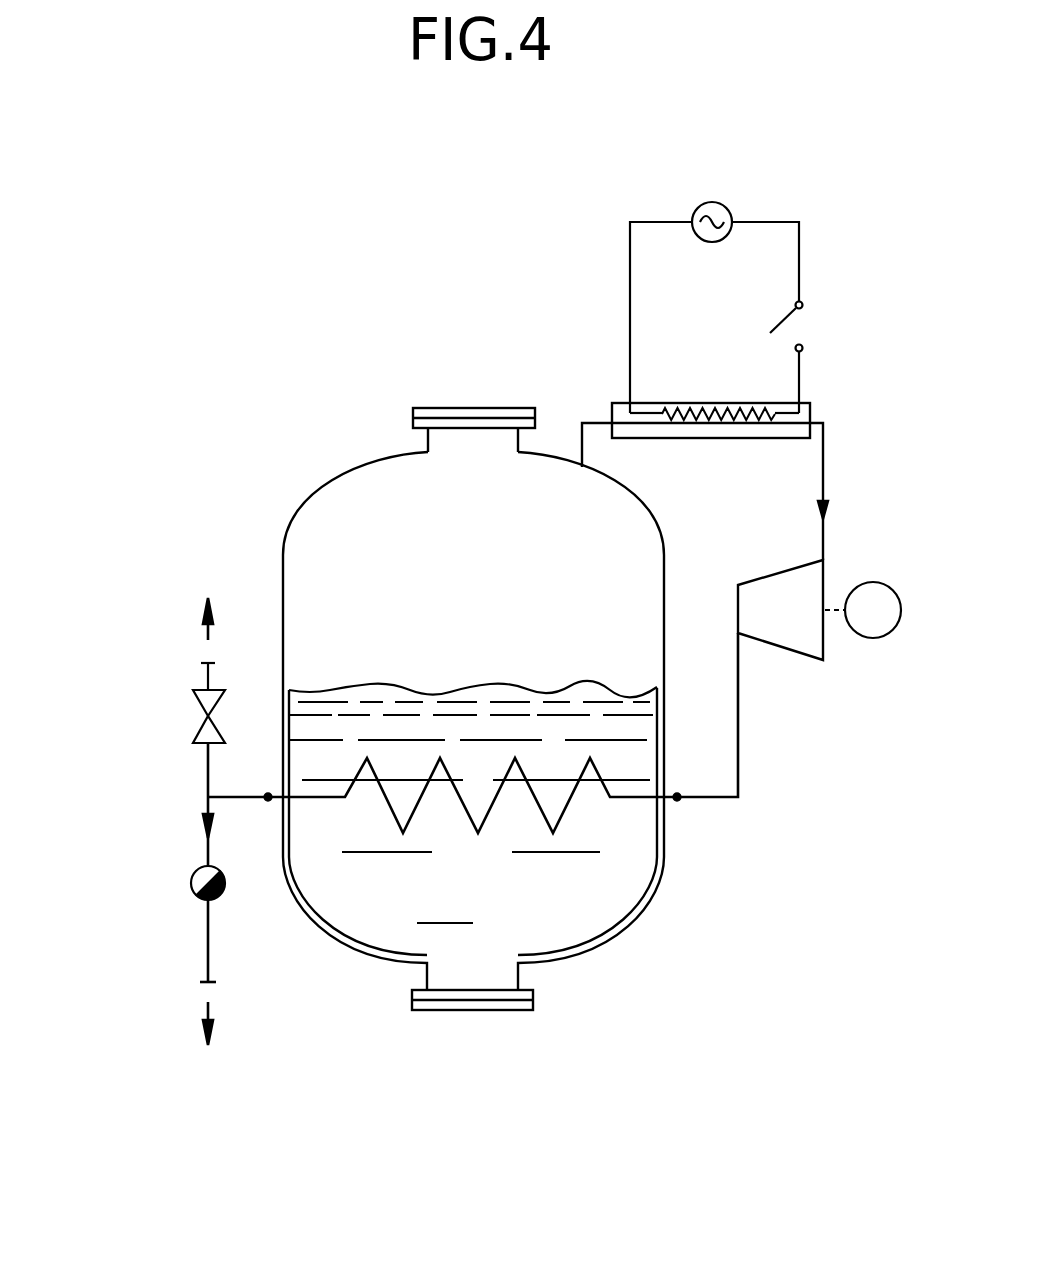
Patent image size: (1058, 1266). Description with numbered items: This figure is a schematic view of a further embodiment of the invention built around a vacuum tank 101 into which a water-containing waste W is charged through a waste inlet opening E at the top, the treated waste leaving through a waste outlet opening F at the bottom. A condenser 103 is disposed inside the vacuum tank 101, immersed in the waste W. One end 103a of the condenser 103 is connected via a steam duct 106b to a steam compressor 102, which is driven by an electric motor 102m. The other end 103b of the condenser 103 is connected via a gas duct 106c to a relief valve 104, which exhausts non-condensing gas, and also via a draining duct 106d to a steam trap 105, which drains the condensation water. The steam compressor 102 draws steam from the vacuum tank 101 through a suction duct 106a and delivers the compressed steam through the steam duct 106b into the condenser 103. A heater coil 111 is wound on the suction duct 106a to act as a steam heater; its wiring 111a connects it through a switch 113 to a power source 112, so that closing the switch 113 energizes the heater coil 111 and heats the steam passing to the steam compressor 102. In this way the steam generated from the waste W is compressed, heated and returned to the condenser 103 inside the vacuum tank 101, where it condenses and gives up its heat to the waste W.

The vacuum tank 101 is at (310, 497).
The steam compressor 102 is at (823, 648).
The electric motor 102m is at (862, 583).
The condenser 103 is at (572, 810).
The one end of condenser 103a is at (677, 805).
The other end of condenser 103b is at (266, 801).
The relief valve 104 is at (195, 732).
The steam trap 105 is at (198, 870).
The suction duct 106a is at (810, 423).
The steam duct 106b is at (738, 752).
The gas duct 106c is at (218, 770).
The draining duct 106d is at (213, 855).
The heater coil 111 is at (730, 408).
The heater coil wiring 111a is at (630, 323).
The power source 112 is at (724, 205).
The switch 113 is at (805, 326).
The waste inlet opening E is at (468, 408).
The water-containing waste W is at (432, 707).
The waste outlet opening F is at (455, 1010).